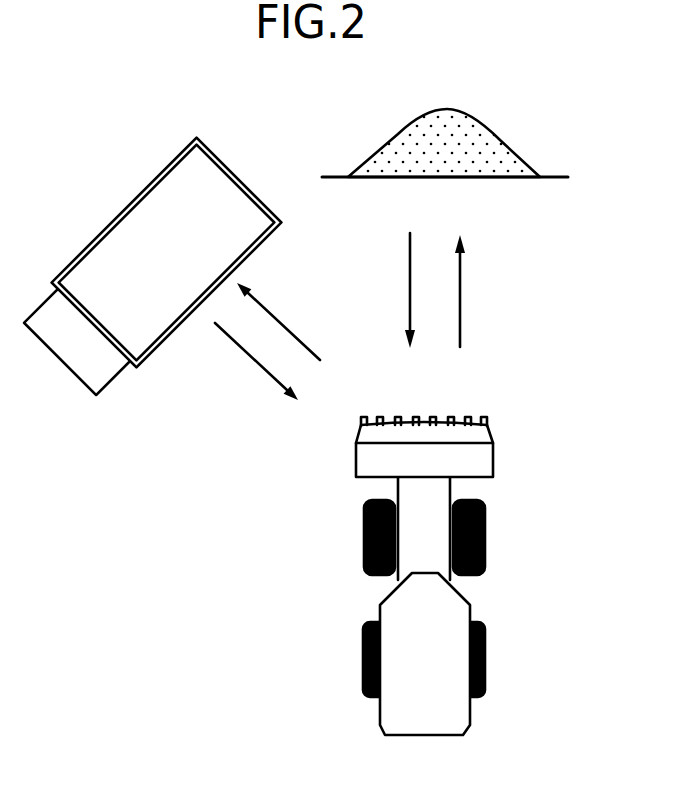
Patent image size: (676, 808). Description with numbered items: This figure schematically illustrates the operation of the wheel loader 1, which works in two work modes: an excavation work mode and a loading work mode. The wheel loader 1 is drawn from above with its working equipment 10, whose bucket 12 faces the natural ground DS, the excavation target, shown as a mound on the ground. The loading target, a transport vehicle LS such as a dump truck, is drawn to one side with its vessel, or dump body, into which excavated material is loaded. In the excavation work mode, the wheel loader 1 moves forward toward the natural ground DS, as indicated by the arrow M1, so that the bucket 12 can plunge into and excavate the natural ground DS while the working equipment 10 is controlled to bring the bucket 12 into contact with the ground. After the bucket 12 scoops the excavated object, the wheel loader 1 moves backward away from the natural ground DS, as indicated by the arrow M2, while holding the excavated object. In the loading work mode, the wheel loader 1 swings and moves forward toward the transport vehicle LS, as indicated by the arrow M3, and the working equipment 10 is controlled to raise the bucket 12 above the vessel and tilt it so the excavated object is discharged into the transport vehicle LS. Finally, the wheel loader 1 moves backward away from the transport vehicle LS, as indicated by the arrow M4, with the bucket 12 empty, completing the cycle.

The wheel loader 1 is at (474, 576).
The working equipment 10 is at (474, 447).
The bucket 12 is at (493, 455).
The transport vehicle LS is at (150, 256).
The natural ground DS is at (493, 133).
The arrow M1 is at (460, 293).
The arrow M2 is at (410, 290).
The arrow M3 is at (292, 333).
The arrow M4 is at (242, 350).